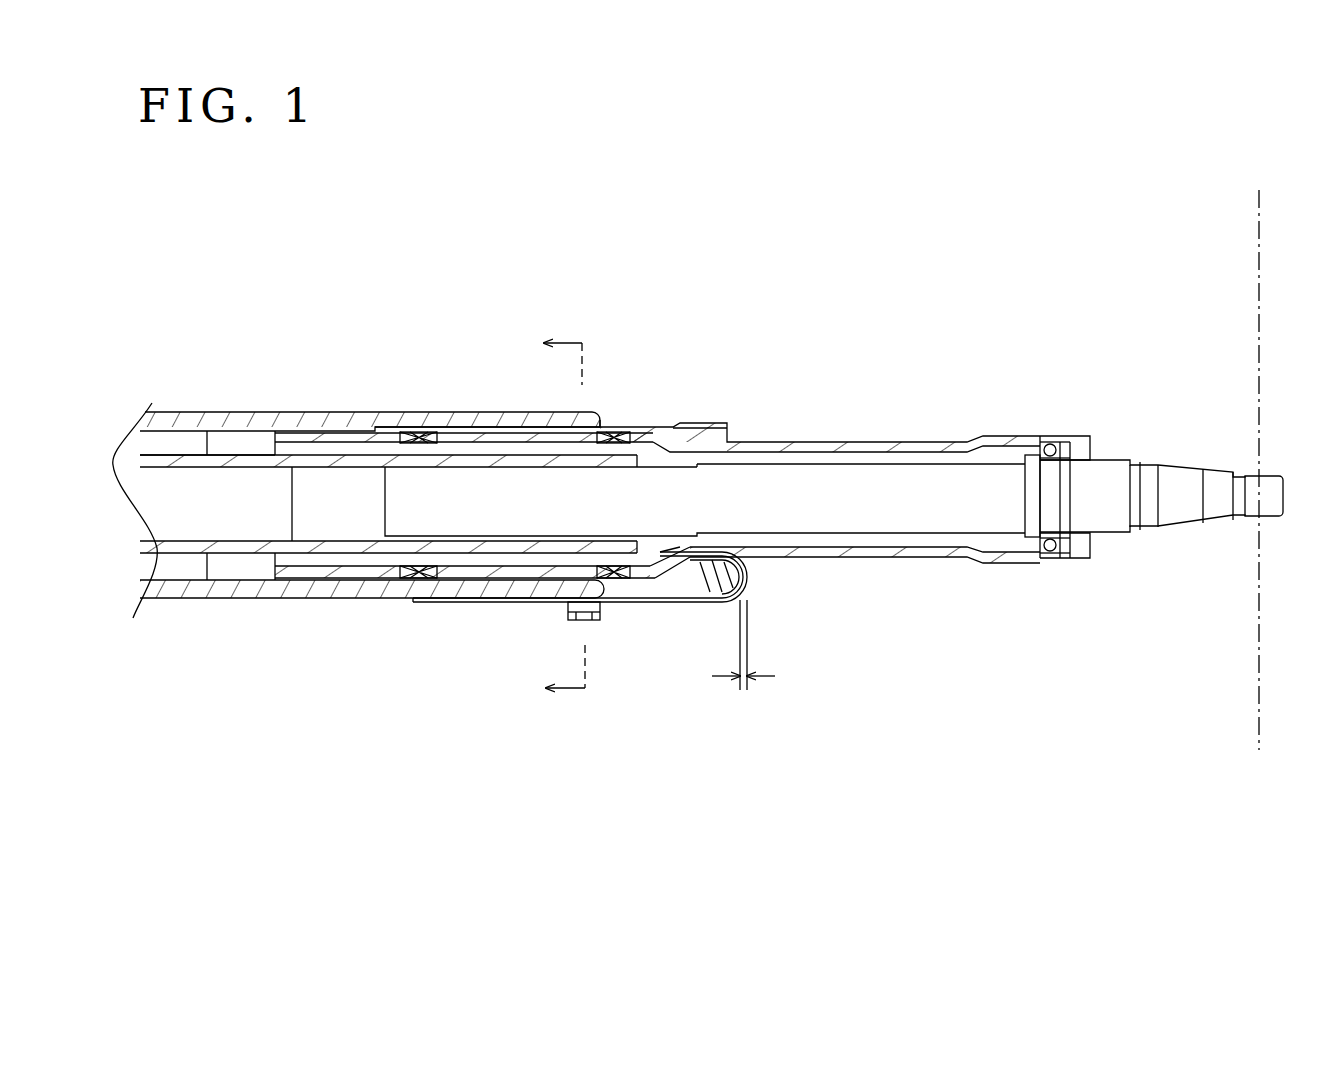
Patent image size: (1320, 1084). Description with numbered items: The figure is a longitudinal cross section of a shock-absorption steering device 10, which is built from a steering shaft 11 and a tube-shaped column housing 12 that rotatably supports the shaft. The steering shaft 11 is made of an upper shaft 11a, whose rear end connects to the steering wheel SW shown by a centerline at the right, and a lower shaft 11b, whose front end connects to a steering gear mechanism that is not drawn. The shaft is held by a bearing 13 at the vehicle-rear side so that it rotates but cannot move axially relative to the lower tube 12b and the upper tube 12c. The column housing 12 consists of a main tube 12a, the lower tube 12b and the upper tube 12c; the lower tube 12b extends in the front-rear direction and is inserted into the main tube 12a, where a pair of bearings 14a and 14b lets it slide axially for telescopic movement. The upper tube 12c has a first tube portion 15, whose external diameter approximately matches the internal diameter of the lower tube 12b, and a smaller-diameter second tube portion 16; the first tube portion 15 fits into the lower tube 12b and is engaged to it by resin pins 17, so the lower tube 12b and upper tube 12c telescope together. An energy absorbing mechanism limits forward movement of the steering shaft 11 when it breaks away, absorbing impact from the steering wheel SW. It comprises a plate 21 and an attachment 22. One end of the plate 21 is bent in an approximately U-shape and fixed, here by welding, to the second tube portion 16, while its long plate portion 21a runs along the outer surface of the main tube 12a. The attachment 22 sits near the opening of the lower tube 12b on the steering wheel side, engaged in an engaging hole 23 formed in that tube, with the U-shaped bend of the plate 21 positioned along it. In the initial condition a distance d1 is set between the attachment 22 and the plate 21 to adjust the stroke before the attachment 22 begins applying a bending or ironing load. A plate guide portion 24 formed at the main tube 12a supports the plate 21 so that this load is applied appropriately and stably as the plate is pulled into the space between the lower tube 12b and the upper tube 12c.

The steering device 10 is at (393, 270).
The steering shaft 11 is at (1163, 462).
The upper shaft 11a is at (892, 466).
The lower shaft 11b is at (190, 412).
The column housing 12 is at (944, 440).
The main tube 12a is at (255, 412).
The lower tube 12b is at (720, 423).
The upper tube 12c is at (792, 442).
The bearing 13 is at (1052, 440).
The bearing 14a is at (328, 433).
The bearing 14b is at (590, 412).
The first tube portion 15 is at (478, 412).
The second tube portion 16 is at (840, 557).
The resin pin 17 is at (392, 432).
The plate 21 is at (470, 603).
The long plate portion 21a is at (512, 603).
The attachment 22 is at (700, 603).
The engaging hole 23 is at (720, 552).
The plate guide portion 24 is at (590, 621).
The distance d1 is at (754, 645).
The steering wheel SW is at (1259, 665).